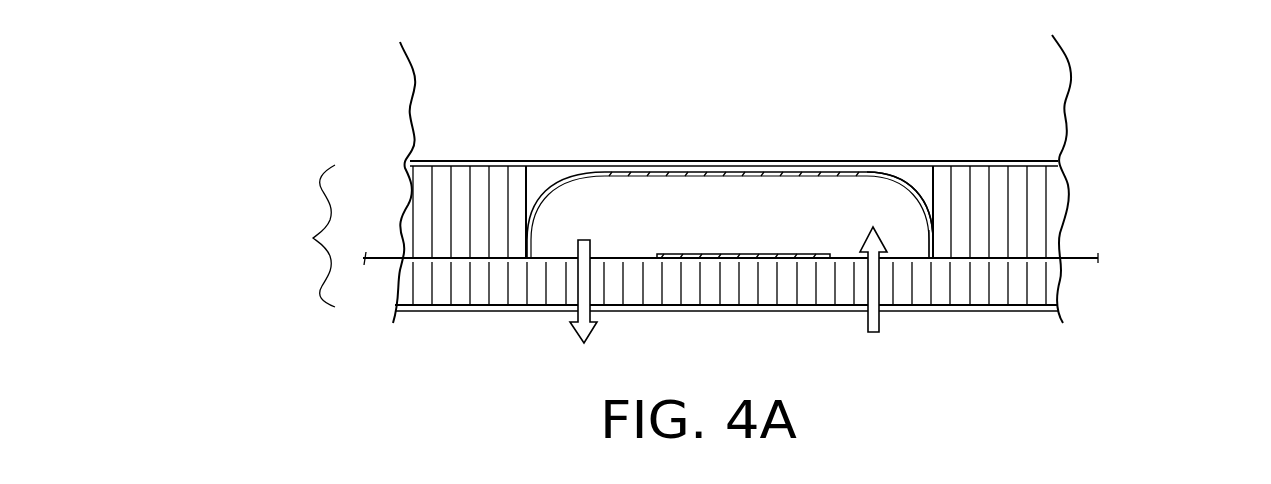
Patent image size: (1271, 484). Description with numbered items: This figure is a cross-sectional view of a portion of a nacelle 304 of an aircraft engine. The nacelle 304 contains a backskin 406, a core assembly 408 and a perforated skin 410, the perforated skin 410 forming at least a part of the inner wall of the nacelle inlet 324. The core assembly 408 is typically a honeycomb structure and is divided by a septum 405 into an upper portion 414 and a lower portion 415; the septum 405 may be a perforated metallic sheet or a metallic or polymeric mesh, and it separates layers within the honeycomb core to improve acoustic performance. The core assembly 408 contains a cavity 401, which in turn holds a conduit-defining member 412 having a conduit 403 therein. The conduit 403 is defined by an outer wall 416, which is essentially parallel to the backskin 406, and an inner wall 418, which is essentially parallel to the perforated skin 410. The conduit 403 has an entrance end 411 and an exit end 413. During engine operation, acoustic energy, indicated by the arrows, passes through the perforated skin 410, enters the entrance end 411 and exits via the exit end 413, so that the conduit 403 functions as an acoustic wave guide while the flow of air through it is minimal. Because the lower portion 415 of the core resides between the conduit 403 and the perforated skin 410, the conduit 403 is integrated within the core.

The nacelle 304 is at (410, 78).
The cavity 401 is at (548, 178).
The backskin 406 is at (743, 166).
The conduit-defining member 412 is at (906, 198).
The upper portion 414 is at (1018, 208).
The core assembly 408 is at (313, 238).
The conduit 403 is at (660, 222).
The inner wall 418 is at (695, 257).
The outer wall 416 is at (803, 177).
The septum 405 is at (1088, 262).
The lower portion 415 is at (1022, 280).
The exit end 413 is at (555, 247).
The nacelle inlet 324 is at (662, 310).
The entrance end 411 is at (907, 233).
The perforated skin 410 is at (998, 308).